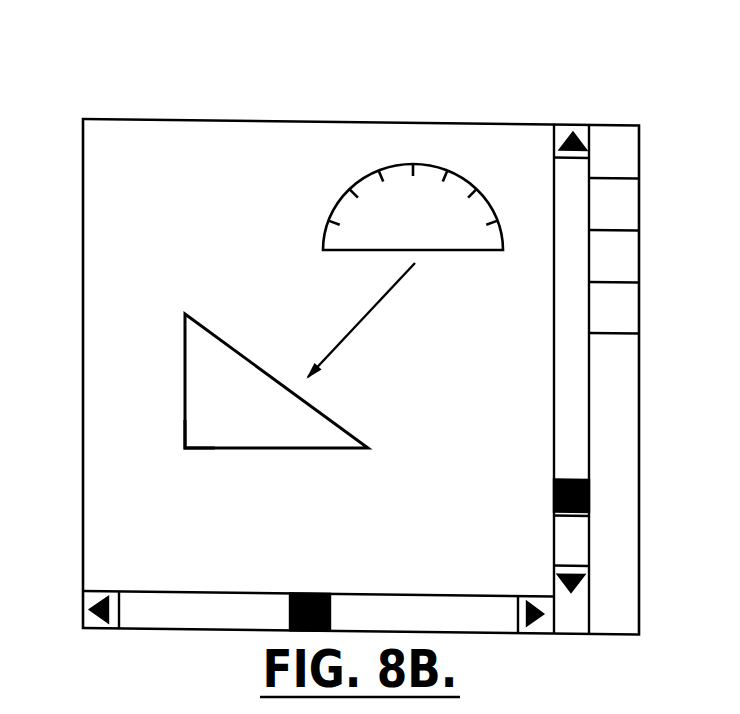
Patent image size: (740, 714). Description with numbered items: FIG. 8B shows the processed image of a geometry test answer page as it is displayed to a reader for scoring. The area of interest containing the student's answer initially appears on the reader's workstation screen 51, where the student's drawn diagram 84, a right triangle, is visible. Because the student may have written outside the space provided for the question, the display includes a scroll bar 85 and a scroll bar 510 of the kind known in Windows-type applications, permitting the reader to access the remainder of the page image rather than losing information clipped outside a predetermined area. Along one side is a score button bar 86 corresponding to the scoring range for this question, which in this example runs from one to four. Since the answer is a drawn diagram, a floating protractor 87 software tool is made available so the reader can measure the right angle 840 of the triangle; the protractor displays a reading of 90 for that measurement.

The workstation screen 51 is at (361, 326).
The diagram 84 is at (188, 388).
The right angle 840 is at (234, 425).
The scroll bar 85 is at (581, 462).
The score button bar 86 is at (627, 252).
The floating protractor 87 is at (347, 196).
The angle reading 90 is at (412, 185).
The scroll bar 510 is at (588, 493).